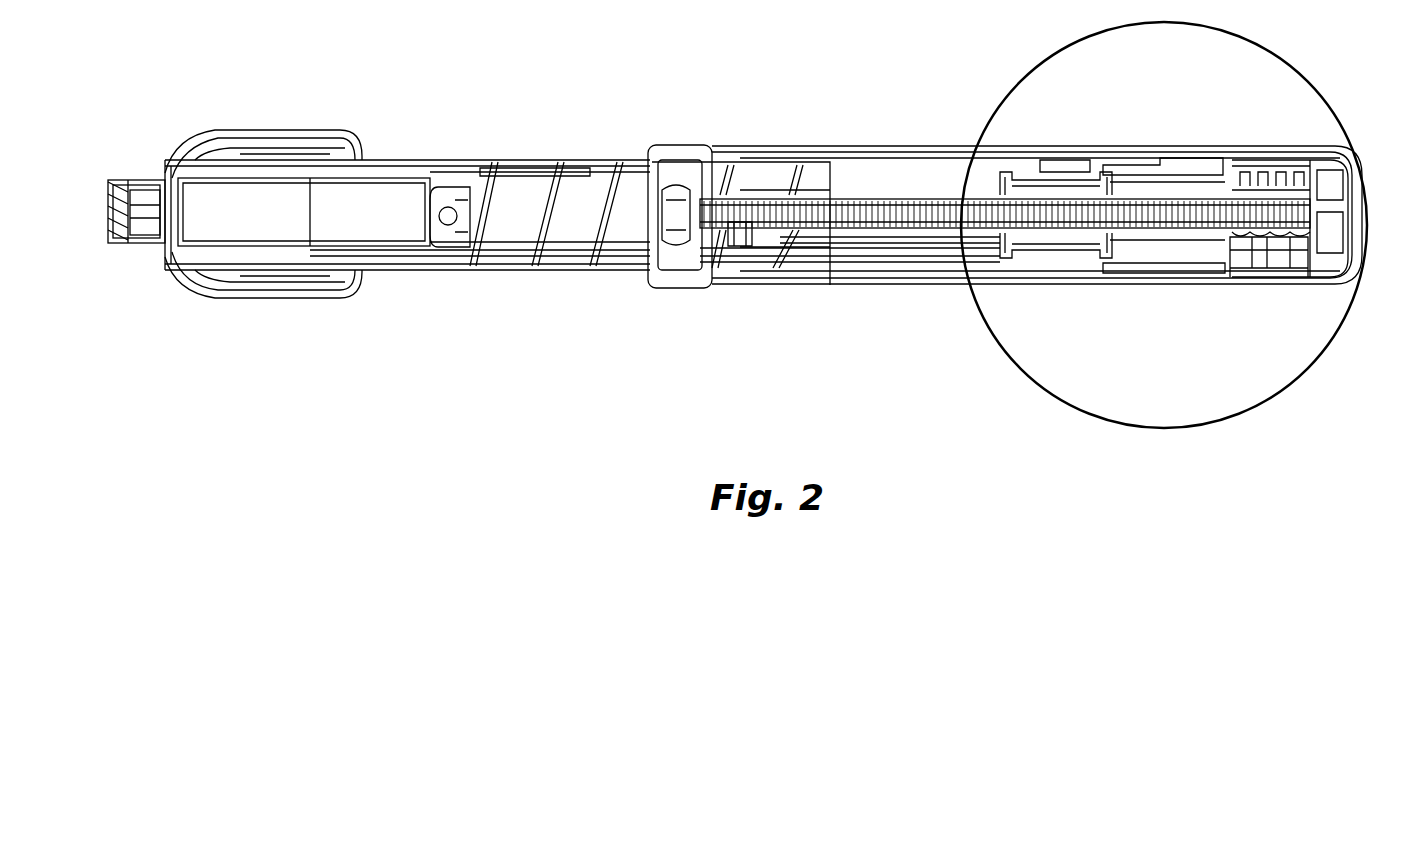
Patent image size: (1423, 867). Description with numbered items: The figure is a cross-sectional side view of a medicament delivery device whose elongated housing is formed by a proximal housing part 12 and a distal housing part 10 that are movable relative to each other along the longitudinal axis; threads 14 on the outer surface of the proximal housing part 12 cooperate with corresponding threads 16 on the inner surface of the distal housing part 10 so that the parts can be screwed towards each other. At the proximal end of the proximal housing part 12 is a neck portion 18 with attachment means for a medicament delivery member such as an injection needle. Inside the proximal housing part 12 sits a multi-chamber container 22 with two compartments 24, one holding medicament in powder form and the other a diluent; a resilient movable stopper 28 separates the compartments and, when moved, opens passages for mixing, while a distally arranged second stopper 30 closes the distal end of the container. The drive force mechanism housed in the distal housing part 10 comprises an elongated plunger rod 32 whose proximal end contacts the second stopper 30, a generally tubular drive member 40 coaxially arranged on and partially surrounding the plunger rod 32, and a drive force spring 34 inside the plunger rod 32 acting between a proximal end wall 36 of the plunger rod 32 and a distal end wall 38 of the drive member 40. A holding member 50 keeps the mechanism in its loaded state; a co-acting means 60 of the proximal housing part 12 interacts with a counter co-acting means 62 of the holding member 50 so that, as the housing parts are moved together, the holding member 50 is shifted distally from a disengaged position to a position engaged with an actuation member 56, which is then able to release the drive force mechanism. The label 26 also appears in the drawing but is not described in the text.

The distal housing part 10 is at (892, 150).
The proximal housing part 12 is at (447, 268).
The threads 14 is at (553, 200).
The threads 16 is at (695, 160).
The neck portion 18 is at (130, 195).
The container 22 is at (308, 177).
The compartments 24 is at (304, 212).
The dial sleeve 26 is at (535, 202).
The stopper 28 is at (450, 195).
The second stopper 30 is at (660, 205).
The plunger rod 32 is at (910, 237).
The drive force spring 34 is at (815, 208).
The proximal end wall 36 is at (743, 233).
The distal end wall 38 is at (1307, 208).
The drive member 40 is at (1145, 245).
The holding member 50 is at (1085, 180).
The actuation member 56 is at (1355, 253).
The co-acting means 60 is at (828, 257).
The counter co-acting means 62 is at (1085, 257).